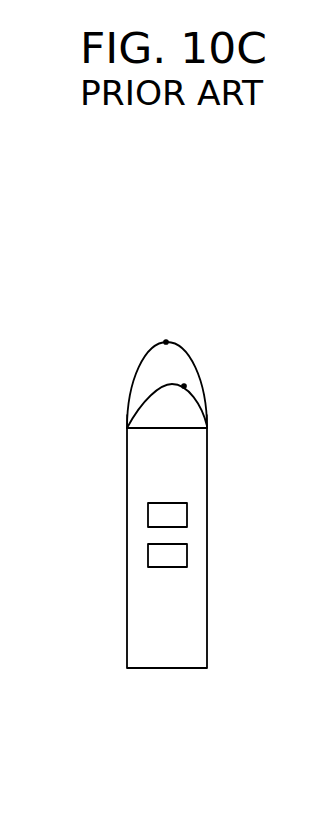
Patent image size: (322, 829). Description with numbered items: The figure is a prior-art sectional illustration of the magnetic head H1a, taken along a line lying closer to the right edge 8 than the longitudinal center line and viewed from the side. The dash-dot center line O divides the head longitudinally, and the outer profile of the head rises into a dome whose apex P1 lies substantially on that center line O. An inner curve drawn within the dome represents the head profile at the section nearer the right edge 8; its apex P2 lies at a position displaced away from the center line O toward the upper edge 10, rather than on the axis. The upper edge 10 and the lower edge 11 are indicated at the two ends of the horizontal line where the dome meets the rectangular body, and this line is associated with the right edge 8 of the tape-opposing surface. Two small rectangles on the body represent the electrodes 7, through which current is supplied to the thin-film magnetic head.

The center line O is at (166, 407).
The magnetic head H1a is at (193, 348).
The apex P1 is at (165, 342).
The apex P2 is at (184, 386).
The lower edge 11 is at (127, 428).
The upper edge 10 is at (207, 428).
The right edge 8 is at (180, 428).
The electrodes 7 is at (174, 517).